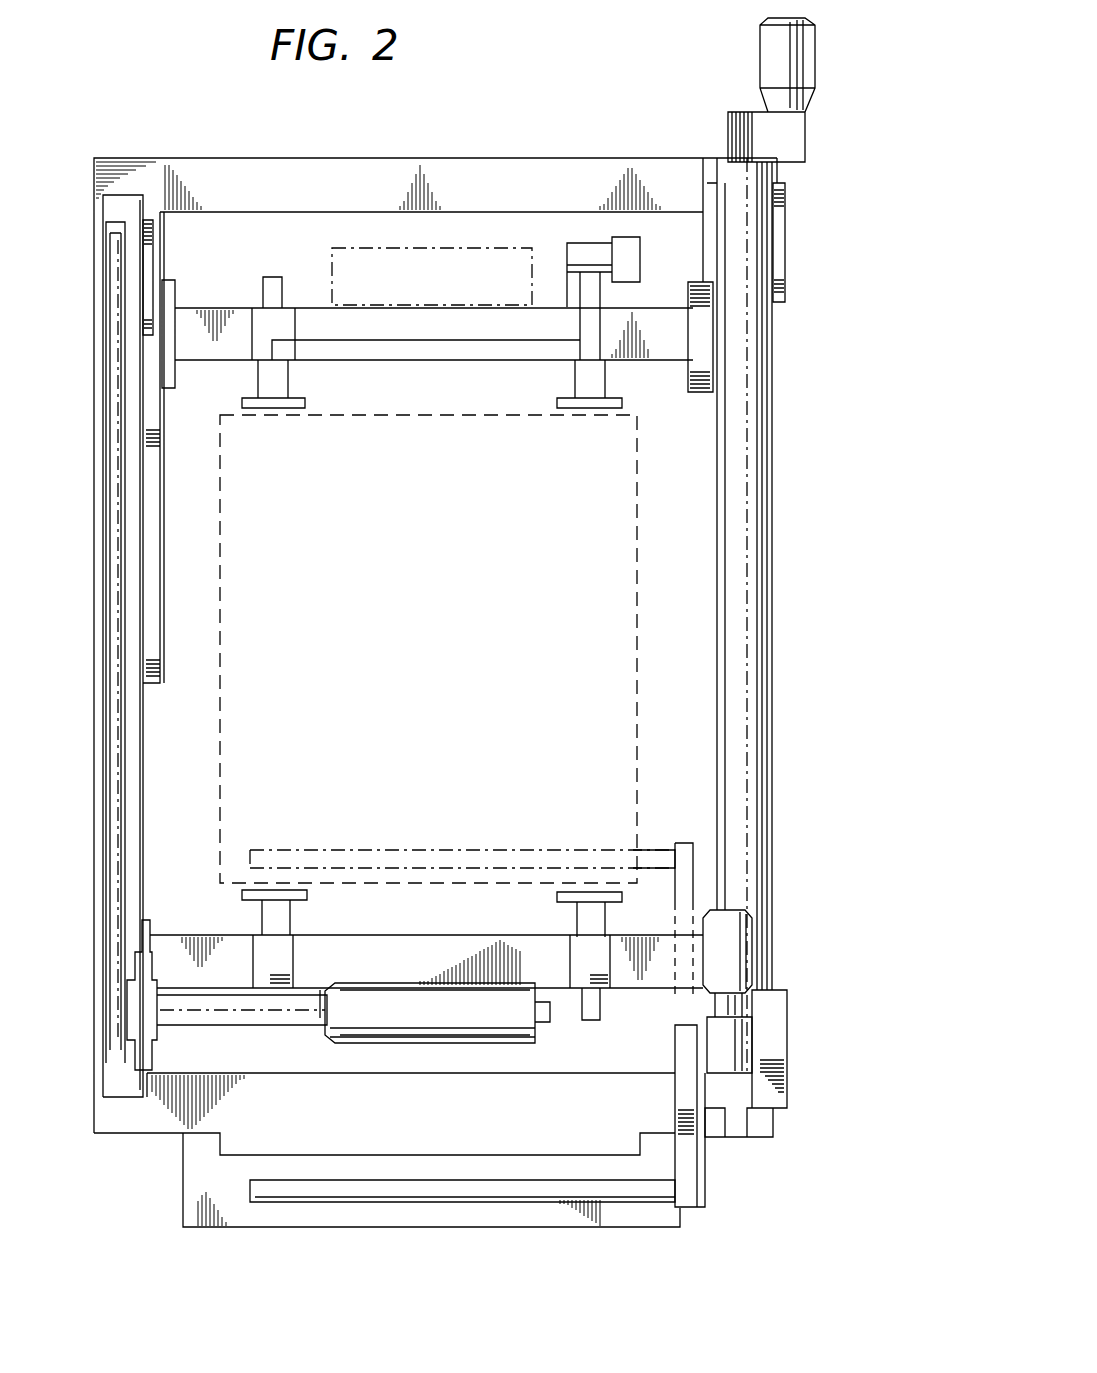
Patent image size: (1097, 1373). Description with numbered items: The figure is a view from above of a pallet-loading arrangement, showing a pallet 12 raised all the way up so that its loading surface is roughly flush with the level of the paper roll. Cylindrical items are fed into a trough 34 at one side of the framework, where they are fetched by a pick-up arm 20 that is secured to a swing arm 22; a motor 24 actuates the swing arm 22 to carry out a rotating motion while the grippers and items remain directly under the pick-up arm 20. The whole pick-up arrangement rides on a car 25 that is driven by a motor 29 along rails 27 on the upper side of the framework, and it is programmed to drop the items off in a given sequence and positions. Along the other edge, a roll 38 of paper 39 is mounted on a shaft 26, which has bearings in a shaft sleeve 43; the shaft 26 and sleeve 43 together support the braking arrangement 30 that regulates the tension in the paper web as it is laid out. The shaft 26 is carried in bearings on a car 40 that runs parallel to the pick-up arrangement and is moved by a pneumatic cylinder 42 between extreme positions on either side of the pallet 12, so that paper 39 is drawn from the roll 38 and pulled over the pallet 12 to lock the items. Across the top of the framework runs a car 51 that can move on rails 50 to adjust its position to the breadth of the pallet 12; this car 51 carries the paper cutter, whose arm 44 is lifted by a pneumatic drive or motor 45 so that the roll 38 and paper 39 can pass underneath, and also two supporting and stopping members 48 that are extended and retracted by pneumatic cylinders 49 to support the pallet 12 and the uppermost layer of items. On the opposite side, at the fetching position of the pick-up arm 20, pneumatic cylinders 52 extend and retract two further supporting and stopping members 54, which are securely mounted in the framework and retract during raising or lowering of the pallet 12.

The pallet 12 is at (638, 590).
The pick-up arm 20 is at (622, 1203).
The swing arm 22 is at (688, 1182).
The motor 24 is at (747, 957).
The car 25 is at (780, 1022).
The shaft 26 is at (548, 1012).
The rails 27 is at (752, 750).
The motor 29 is at (772, 63).
The braking arrangement 30 is at (315, 983).
The trough 34 is at (203, 1177).
The roll of paper 38 is at (415, 975).
The paper 39 is at (390, 995).
The car 40 is at (140, 1010).
The pneumatic cylinder 42 is at (93, 623).
The shaft sleeve 43 is at (252, 1030).
The arm 44 is at (438, 356).
The pneumatic drive or motor 45 is at (622, 243).
The supporting and stopping members 48 is at (590, 410).
The pneumatic cylinders 49 is at (270, 327).
The rails 50 is at (712, 615).
The car 51 is at (680, 343).
The pneumatic cylinders 52 is at (255, 955).
The supporting and stopping members 54 is at (597, 893).